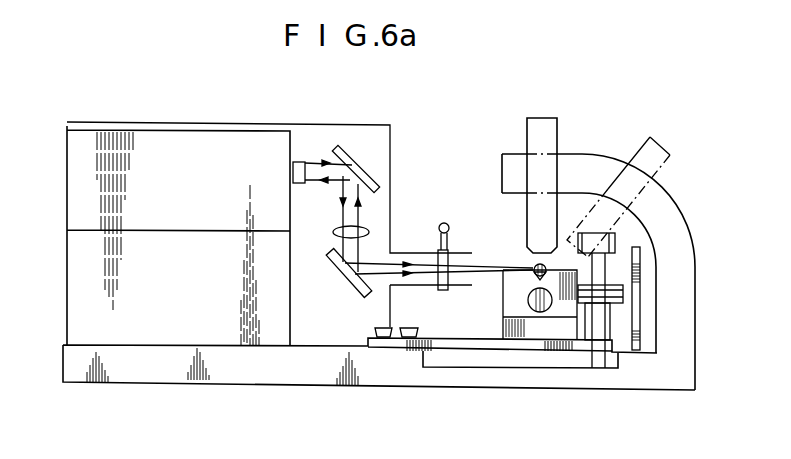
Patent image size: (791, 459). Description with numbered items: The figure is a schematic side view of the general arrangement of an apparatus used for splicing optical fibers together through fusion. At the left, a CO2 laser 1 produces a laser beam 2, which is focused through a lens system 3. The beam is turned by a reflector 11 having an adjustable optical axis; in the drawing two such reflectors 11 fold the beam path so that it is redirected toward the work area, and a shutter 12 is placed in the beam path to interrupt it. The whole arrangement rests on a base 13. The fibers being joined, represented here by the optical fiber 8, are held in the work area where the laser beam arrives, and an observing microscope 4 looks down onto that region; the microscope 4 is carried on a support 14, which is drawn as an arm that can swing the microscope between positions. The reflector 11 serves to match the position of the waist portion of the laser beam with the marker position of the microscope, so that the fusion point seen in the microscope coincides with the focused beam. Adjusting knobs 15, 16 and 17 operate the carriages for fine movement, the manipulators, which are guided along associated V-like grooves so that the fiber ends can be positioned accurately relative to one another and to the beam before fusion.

The CO2 laser 1 is at (185, 130).
The laser beam 2 is at (321, 178).
The lens system 3 is at (335, 232).
The observing microscope 4 is at (553, 140).
The optical fiber 8 is at (534, 264).
The reflector with adjustable optical axis 11 is at (356, 167).
The shutter 12 is at (444, 223).
The base 13 is at (231, 384).
The support for the microscope 14 is at (680, 240).
The adjusting knob 15 is at (528, 300).
The adjusting knob 16 is at (630, 297).
The adjusting knob 17 is at (611, 250).